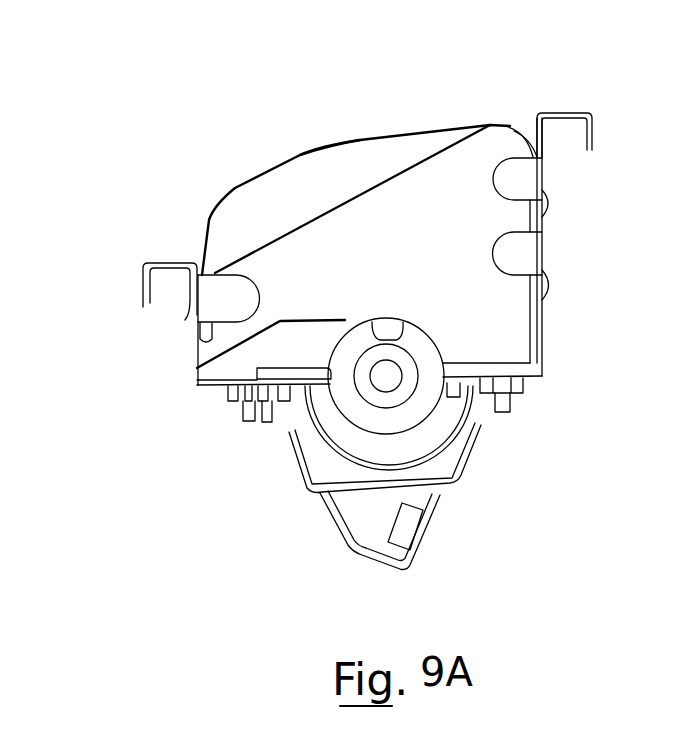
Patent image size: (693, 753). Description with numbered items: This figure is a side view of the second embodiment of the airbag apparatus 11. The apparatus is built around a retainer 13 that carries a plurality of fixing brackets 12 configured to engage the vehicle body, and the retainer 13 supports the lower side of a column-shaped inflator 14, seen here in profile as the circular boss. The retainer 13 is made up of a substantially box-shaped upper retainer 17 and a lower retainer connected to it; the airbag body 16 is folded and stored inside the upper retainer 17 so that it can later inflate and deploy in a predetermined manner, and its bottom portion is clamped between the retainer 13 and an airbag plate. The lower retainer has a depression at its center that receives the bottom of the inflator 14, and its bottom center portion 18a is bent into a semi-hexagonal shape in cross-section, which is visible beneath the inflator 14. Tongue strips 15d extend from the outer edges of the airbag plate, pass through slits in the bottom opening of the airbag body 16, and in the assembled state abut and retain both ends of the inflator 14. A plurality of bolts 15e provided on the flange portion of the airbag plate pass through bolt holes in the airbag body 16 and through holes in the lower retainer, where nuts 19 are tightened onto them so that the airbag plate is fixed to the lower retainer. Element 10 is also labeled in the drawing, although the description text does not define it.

The airbag apparatus 11 is at (531, 92).
The airbag body 16 is at (313, 148).
The upper retainer 17 is at (510, 337).
The retainer 13 is at (566, 348).
The tongue strips 15d is at (380, 333).
The nuts 19 is at (265, 395).
The bolts 15e is at (253, 423).
The terminal block 10 is at (520, 390).
The inflator 14 is at (362, 415).
The bottom center portion 18a is at (342, 545).
The fixing brackets 12 is at (413, 542).